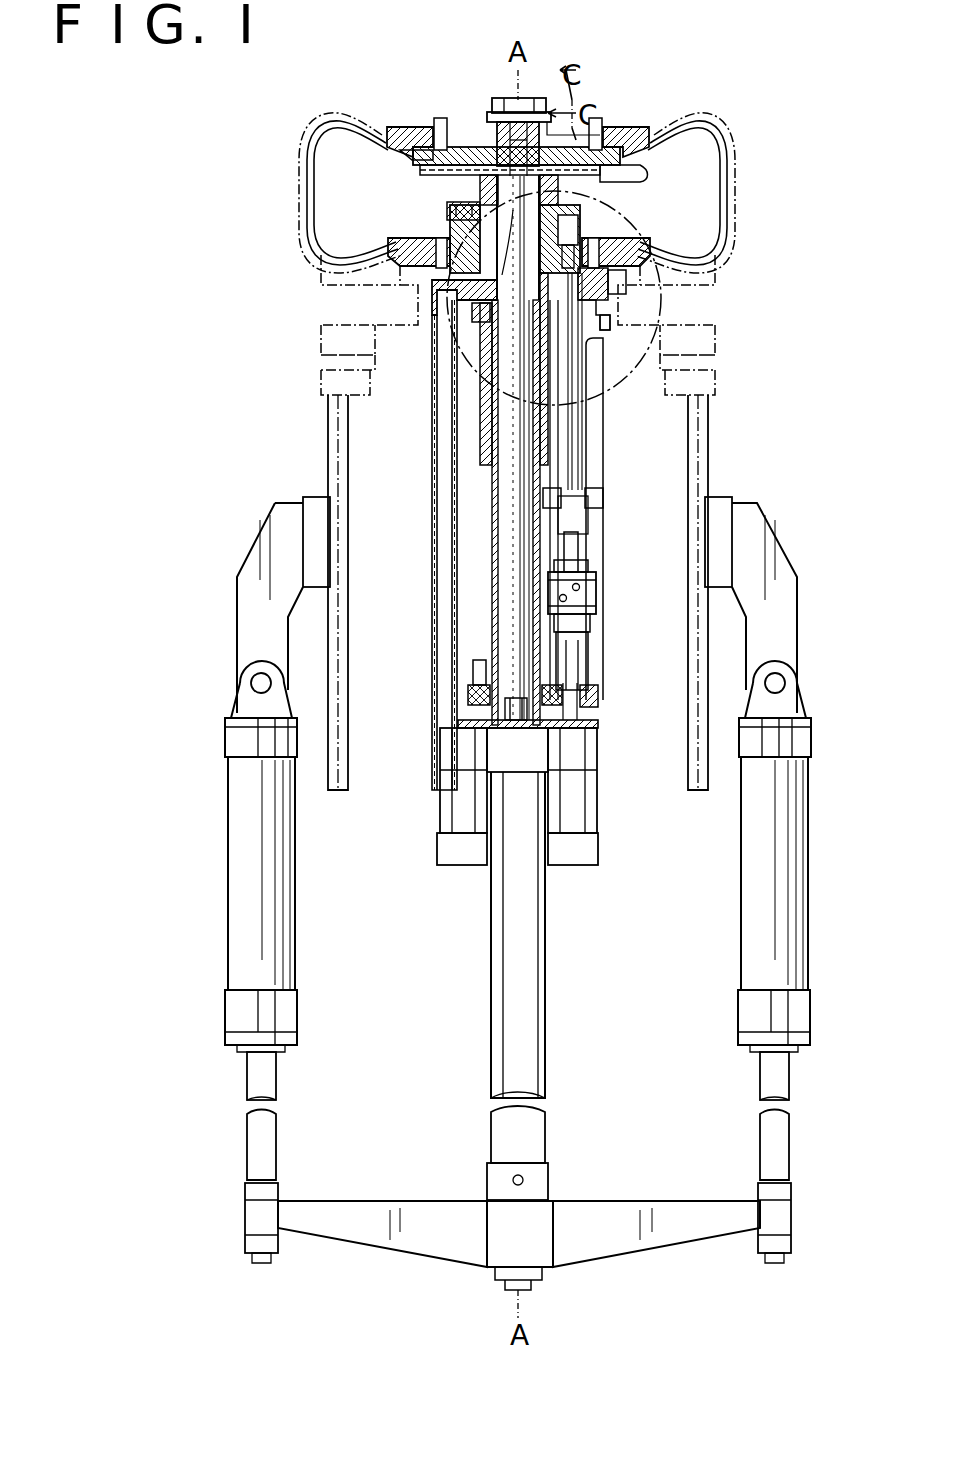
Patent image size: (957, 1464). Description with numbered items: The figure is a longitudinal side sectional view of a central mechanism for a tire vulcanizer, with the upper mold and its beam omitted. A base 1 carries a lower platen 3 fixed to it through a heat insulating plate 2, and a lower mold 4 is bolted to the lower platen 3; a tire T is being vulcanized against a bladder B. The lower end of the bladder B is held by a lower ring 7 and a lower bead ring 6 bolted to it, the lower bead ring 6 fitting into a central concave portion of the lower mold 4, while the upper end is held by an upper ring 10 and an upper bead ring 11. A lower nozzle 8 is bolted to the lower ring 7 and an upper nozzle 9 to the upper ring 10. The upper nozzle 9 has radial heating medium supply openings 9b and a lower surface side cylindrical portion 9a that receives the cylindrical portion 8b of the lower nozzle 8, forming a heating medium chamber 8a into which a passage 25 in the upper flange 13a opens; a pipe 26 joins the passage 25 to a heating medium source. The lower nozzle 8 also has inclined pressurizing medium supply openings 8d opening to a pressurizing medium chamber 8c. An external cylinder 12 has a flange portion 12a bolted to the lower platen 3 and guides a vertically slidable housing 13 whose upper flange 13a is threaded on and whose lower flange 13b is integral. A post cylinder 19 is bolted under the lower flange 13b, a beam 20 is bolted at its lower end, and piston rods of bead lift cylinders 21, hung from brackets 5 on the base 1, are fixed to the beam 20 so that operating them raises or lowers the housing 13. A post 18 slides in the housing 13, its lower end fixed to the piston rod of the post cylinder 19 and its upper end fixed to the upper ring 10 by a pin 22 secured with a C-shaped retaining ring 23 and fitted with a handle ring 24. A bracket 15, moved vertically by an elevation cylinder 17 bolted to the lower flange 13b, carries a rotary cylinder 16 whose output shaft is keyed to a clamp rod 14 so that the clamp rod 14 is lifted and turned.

The base 1 is at (706, 376).
The heat insulating plate 2 is at (710, 352).
The lower platen 3 is at (712, 306).
The lower mold 4 is at (705, 268).
The bracket 5 is at (762, 548).
The lower bead ring 6 is at (600, 266).
The lower ring 7 is at (605, 250).
The lower nozzle 8 is at (558, 212).
The heating medium chamber 8a is at (505, 310).
The cylindrical portion 8b is at (482, 190).
The pressurizing medium chamber 8c is at (517, 499).
The pressurizing medium supply openings 8d is at (455, 207).
The upper nozzle 9 is at (595, 182).
The lower surface side cylindrical portion 9a is at (468, 170).
The heating medium supply openings 9b is at (415, 145).
The upper ring 10 is at (650, 152).
The upper bead ring 11 is at (632, 136).
The external cylinder 12 is at (548, 450).
The flange portion 12a is at (612, 328).
The housing 13 is at (568, 480).
The upper flange 13a is at (612, 296).
The lower flange 13b is at (594, 726).
The clamp rod 14 is at (572, 496).
The bracket 15 is at (600, 552).
The rotary cylinder 16 is at (598, 595).
The elevation cylinder 17 is at (590, 812).
The post 18 is at (560, 665).
The post cylinder 19 is at (548, 964).
The beam 20 is at (692, 1210).
The bead lift cylinder 21 is at (742, 952).
The pin 22 is at (490, 118).
The C-shaped retaining ring 23 is at (497, 110).
The handle ring 24 is at (560, 128).
The passage 25 is at (470, 300).
The pipe 26 is at (433, 432).
The bladder B is at (722, 160).
The tire T is at (748, 205).